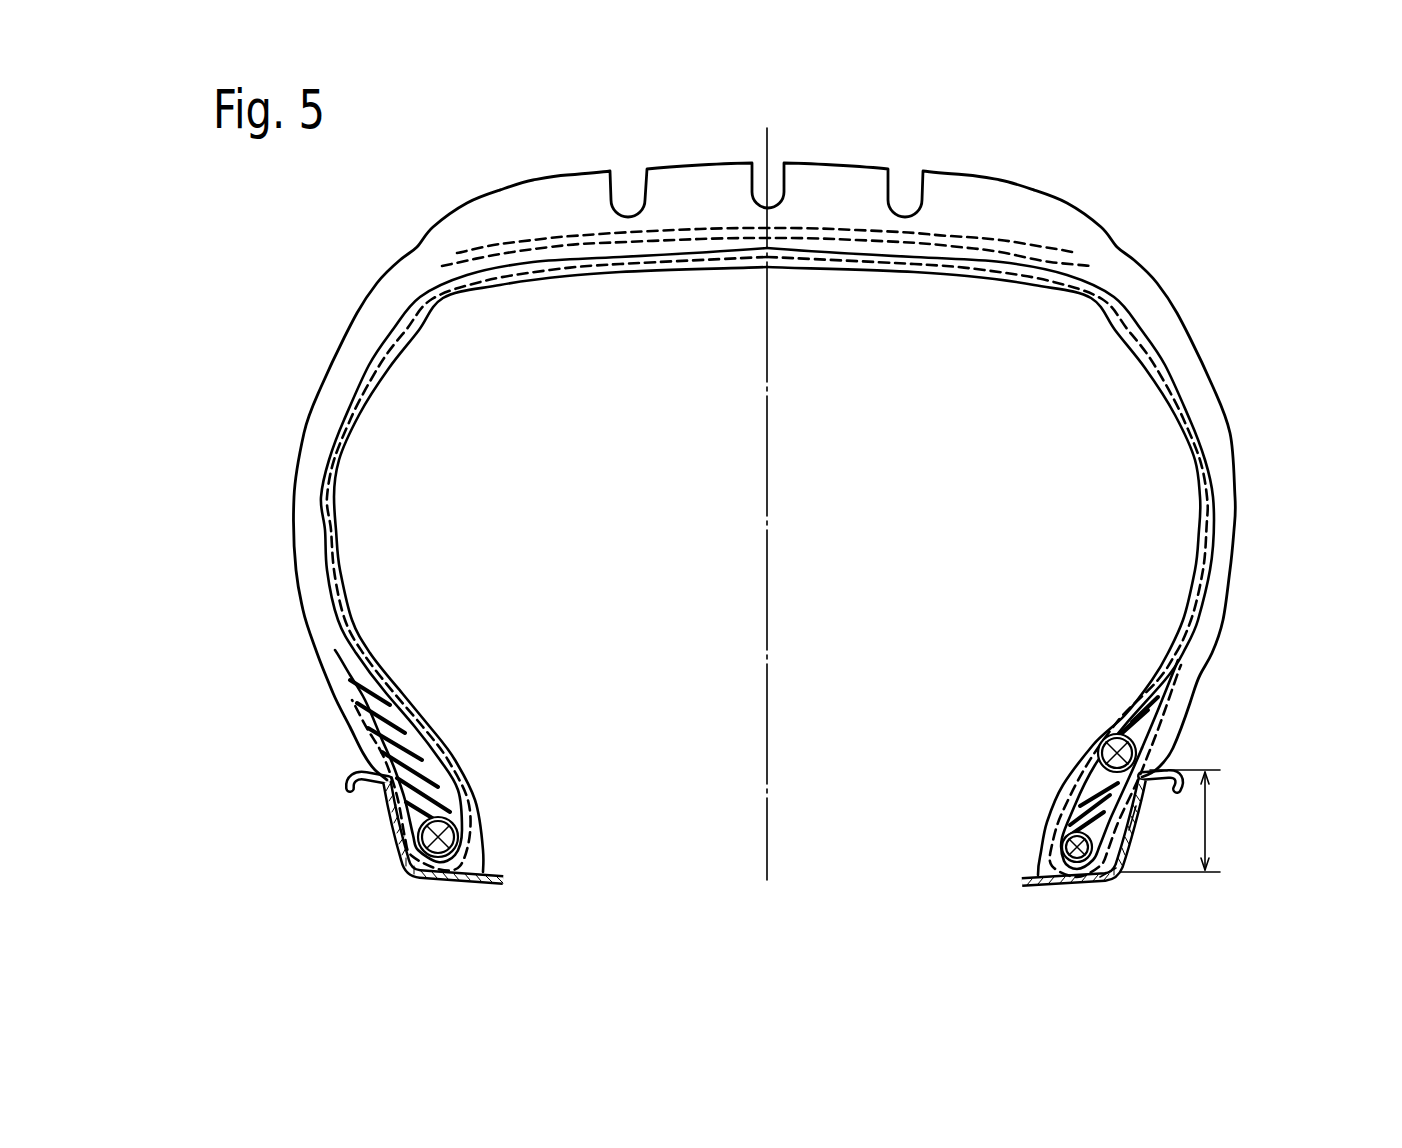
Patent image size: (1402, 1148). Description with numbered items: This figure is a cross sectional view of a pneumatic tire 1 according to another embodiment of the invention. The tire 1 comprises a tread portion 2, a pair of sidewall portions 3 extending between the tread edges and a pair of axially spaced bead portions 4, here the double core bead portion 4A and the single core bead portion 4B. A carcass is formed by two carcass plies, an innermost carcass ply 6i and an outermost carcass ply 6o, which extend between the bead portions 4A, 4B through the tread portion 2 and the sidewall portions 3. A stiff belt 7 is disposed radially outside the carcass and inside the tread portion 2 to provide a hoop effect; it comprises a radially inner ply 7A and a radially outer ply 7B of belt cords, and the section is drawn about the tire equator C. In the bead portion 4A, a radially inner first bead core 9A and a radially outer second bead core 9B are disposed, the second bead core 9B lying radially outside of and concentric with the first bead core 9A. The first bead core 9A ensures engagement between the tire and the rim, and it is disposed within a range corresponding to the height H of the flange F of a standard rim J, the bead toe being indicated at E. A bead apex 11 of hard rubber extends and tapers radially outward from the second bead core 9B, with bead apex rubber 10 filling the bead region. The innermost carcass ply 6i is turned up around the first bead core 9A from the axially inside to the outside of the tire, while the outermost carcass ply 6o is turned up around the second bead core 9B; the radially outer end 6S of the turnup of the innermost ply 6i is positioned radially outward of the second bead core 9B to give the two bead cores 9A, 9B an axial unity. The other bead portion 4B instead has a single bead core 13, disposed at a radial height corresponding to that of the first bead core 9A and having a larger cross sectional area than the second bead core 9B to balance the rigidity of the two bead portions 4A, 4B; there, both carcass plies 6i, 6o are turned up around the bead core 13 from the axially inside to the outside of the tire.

The pneumatic tire 1 is at (1185, 280).
The tread portion 2 is at (849, 156).
The sidewall portions 3 is at (283, 462).
The bead portions 4 is at (777, 798).
The bead portion 4A is at (1170, 752).
The bead portion 4B is at (342, 762).
The innermost carcass ply 6i is at (1152, 350).
The outermost carcass ply 6o is at (1205, 443).
The radially outer end of the turnup portion 6S is at (1167, 712).
The belt 7 is at (766, 334).
The radially inner ply 7A is at (627, 243).
The radially outer ply 7B is at (708, 232).
The first bead core 9A is at (1060, 848).
The second bead core 9B is at (1107, 737).
The bead apex rubber 10 is at (1085, 793).
The bead apex 11 is at (1138, 690).
The bead core 13 is at (407, 873).
The tire equator C is at (765, 588).
The bead toe E is at (1054, 872).
The rim flange F is at (1133, 817).
The height of a flange H is at (1170, 821).
The standard rim J is at (1087, 877).